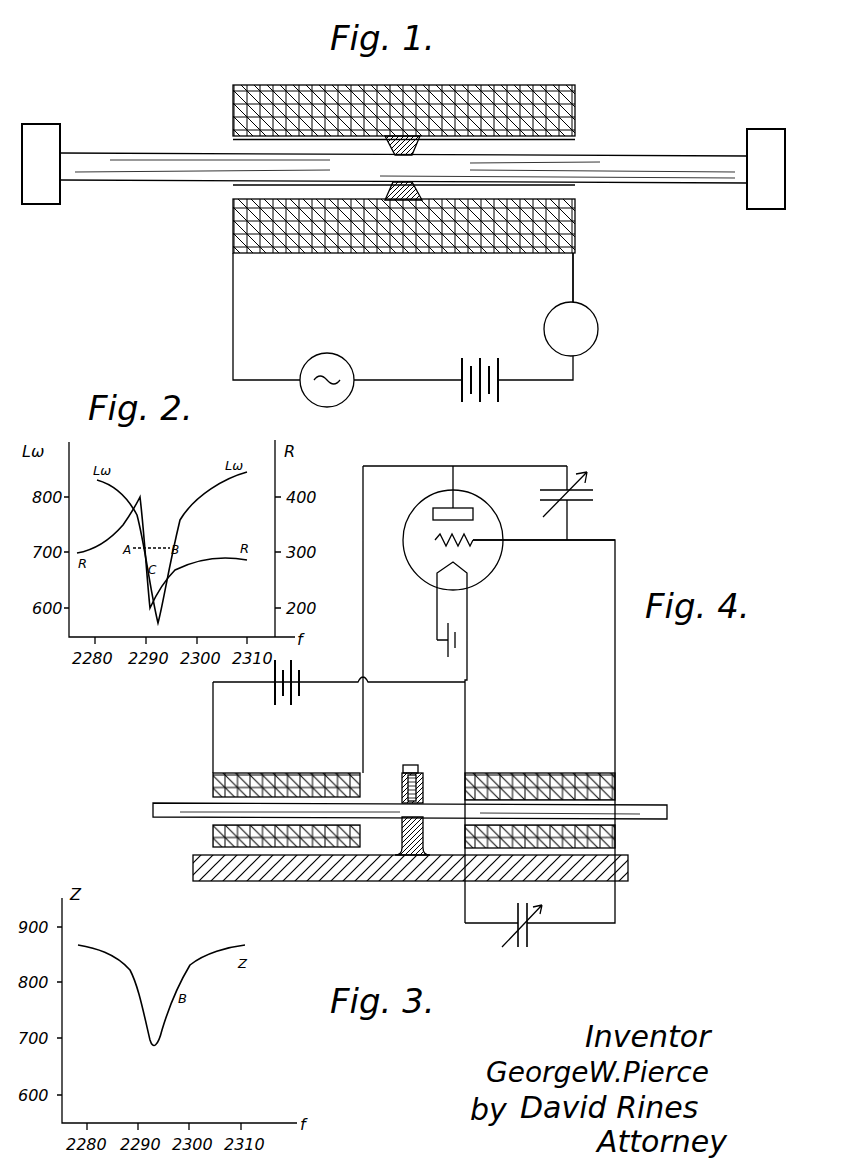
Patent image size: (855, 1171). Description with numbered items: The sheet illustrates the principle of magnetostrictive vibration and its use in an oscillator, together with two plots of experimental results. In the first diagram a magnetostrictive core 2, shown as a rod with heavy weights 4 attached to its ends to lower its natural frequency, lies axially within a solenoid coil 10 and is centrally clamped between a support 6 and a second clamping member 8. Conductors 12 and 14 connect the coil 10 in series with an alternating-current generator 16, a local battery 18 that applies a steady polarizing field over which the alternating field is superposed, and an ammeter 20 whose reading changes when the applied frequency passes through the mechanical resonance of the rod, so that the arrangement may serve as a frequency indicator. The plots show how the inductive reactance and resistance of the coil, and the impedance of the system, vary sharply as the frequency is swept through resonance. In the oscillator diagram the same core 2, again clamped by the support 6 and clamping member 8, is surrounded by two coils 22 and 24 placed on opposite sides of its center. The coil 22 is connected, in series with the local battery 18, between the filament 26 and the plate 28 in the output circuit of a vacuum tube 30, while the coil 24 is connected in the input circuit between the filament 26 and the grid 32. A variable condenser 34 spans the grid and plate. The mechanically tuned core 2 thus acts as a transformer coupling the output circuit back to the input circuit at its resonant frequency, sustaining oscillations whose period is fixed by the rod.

In FIG. 1, the core 2 is at (183, 153).
In FIG. 4, the core 2 is at (455, 803).
In FIG. 1, the heavy weights 4 is at (50, 204).
In FIG. 1, the support 6 is at (410, 180).
In FIG. 4, the support 6 is at (402, 820).
In FIG. 1, the clamping member 8 is at (396, 157).
In FIG. 4, the clamping member 8 is at (402, 800).
In FIG. 1, the solenoid coil 10 is at (430, 253).
In FIG. 1, the conductor 12 is at (233, 313).
In FIG. 1, the conductor 14 is at (573, 283).
In FIG. 1, the alternating-current generator 16 is at (333, 400).
In FIG. 1, the local battery 18 is at (495, 405).
In FIG. 4, the local battery 18 is at (272, 690).
In FIG. 1, the ammeter 20 is at (595, 348).
In FIG. 4, the coil 22 is at (290, 773).
In FIG. 4, the coil 24 is at (575, 773).
In FIG. 4, the filament 26 is at (467, 573).
In FIG. 4, the plate 28 is at (433, 508).
In FIG. 4, the vacuum tube 30 is at (503, 553).
In FIG. 4, the grid 32 is at (435, 541).
In FIG. 4, the variable condenser 34 is at (580, 500).